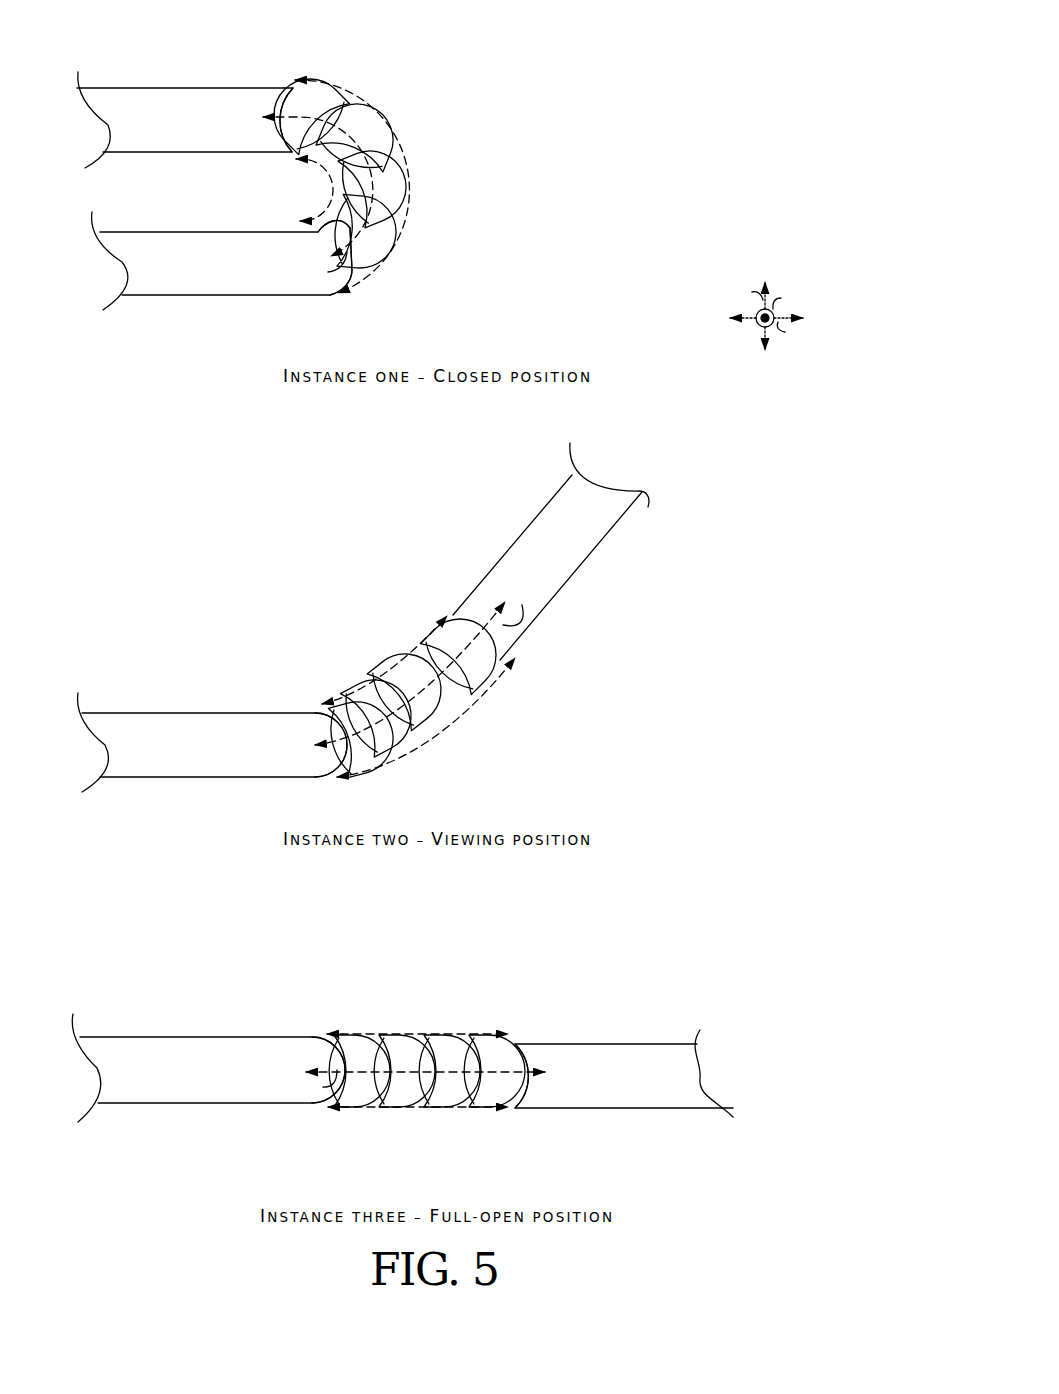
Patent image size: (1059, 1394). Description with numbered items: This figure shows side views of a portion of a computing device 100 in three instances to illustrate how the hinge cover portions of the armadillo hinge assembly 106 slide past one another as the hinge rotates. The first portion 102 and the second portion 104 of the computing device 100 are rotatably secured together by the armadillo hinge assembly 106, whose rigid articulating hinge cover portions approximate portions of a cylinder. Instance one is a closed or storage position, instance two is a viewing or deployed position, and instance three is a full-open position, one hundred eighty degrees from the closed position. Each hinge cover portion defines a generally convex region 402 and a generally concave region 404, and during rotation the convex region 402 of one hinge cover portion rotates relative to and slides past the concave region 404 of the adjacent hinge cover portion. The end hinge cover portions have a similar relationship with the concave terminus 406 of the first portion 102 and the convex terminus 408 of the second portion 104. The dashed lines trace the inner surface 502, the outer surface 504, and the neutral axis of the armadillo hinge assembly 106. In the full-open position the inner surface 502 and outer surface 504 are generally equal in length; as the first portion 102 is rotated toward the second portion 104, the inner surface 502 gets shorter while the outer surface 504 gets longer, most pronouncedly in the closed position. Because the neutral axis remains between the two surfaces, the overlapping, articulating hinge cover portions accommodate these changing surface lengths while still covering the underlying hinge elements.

The computing device 100 is at (593, 47).
The first portion 102 is at (623, 1098).
The second portion 104 is at (240, 1095).
The armadillo hinge assembly 106 is at (424, 174).
The convex region 402 is at (318, 83).
The concave region 404 is at (351, 112).
The concave terminus 406 is at (300, 81).
The convex terminus 408 is at (360, 270).
The inner surface 502 is at (332, 186).
The outer surface 504 is at (408, 212).